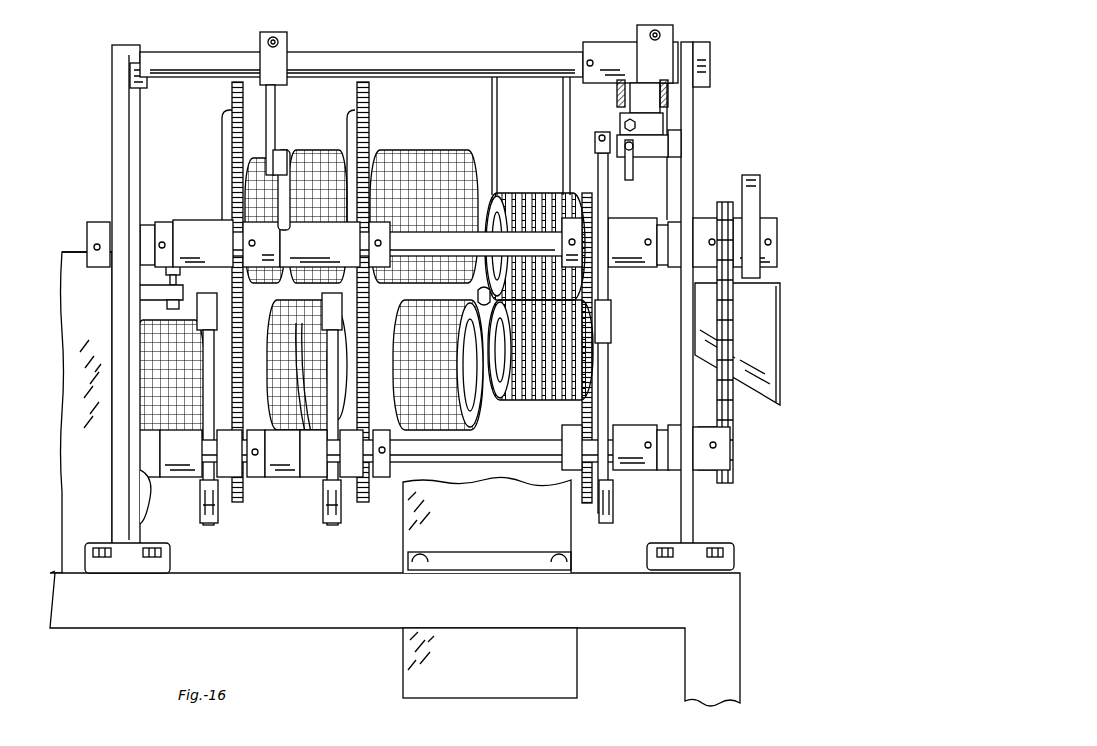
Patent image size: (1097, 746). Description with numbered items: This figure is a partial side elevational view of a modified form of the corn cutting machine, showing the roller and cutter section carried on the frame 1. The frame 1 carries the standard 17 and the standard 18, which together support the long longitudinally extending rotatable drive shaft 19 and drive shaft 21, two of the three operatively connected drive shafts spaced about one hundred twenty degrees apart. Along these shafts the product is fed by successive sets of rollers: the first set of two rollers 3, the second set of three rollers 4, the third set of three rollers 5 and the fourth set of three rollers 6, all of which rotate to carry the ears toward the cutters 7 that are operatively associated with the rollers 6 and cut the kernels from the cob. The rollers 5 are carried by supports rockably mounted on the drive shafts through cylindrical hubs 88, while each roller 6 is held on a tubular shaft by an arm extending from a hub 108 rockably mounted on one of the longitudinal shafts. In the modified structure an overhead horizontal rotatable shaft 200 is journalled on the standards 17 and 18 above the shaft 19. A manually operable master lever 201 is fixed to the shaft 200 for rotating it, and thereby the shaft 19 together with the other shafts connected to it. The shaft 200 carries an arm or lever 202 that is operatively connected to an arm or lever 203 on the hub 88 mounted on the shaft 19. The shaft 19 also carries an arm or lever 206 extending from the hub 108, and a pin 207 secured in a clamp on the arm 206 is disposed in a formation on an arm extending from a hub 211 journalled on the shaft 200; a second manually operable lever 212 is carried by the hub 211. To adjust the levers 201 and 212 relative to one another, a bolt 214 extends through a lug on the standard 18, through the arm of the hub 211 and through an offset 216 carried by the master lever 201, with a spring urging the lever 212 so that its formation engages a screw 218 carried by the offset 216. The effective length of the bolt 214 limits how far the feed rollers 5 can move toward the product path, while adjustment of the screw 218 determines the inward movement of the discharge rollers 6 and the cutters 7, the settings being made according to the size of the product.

The frame 1 is at (70, 625).
The first set of two rollers 3 is at (140, 423).
The second set of three rollers 4 is at (310, 150).
The third set of three rollers 5 is at (437, 150).
The fourth set of three rollers 6 is at (515, 198).
The cutters 7 is at (478, 292).
The standard 17 is at (118, 137).
The standard 18 is at (690, 150).
The drive shaft 19 is at (273, 645).
The drive shaft 21 is at (532, 452).
The cylindrical hub 88 is at (320, 244).
The hub 108 is at (632, 242).
The overhead horizontal rotatable shaft 200 is at (338, 55).
The master lever 201 is at (668, 99).
The arm or lever 202 is at (268, 110).
The arm or lever 203 is at (297, 207).
The arm or lever 206 is at (598, 175).
The pin 207 is at (598, 160).
The hub 211 is at (615, 58).
The manually operable lever 212 is at (617, 98).
The bolt 214 is at (625, 123).
The offset 216 is at (650, 150).
The screw 218 is at (628, 180).